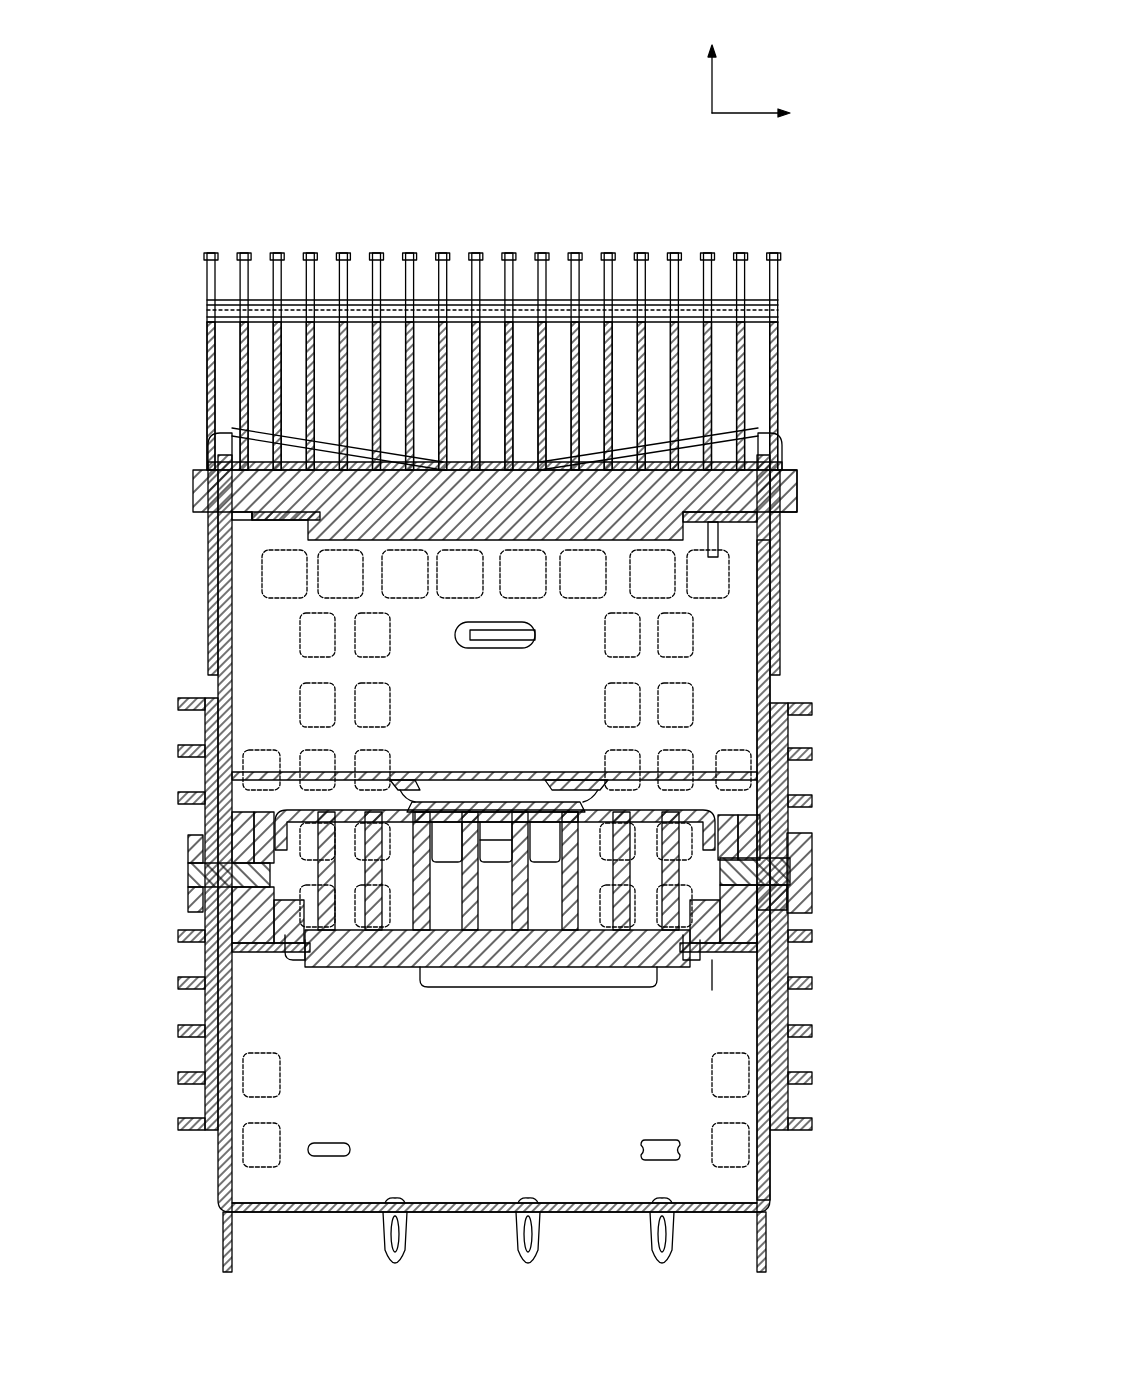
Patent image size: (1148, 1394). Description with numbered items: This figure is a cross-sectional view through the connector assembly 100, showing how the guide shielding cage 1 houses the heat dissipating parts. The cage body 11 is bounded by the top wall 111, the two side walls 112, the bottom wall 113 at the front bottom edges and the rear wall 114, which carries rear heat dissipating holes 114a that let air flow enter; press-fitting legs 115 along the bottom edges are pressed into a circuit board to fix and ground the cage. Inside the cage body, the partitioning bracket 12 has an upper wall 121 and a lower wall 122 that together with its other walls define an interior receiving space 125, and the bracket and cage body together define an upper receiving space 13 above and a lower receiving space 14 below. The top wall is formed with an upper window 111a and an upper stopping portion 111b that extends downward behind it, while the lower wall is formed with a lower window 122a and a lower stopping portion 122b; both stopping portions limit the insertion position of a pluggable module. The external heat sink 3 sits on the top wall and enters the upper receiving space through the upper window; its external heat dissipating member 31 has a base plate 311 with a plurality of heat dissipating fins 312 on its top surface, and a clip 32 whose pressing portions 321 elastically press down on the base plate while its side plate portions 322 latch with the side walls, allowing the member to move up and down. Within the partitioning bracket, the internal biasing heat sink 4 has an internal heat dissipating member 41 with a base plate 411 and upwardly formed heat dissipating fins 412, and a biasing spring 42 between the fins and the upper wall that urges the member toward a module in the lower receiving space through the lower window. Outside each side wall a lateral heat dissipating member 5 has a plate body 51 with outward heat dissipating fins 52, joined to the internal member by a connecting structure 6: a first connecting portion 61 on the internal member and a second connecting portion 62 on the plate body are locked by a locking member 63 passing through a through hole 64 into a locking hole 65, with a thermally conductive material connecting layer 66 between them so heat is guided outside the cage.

The connector assembly 100 is at (372, 91).
The guide shielding cage 1 is at (802, 1221).
The cage body 11 is at (786, 1177).
The top wall 111 is at (243, 503).
The upper window 111a is at (320, 520).
The upper stopping portion 111b is at (620, 548).
The side wall 112 is at (762, 1140).
The bottom wall 113 is at (460, 1210).
The rear wall 114 is at (592, 1167).
The rear heat dissipating hole 114a is at (392, 703).
The press-fitting leg 115 is at (758, 1270).
The partitioning bracket 12 is at (410, 737).
The upper wall 121 is at (428, 788).
The interior receiving space 125 is at (589, 773).
The lower wall 122 is at (262, 958).
The lower window 122a is at (688, 958).
The lower stopping portion 122b is at (568, 983).
The upper receiving space 13 is at (737, 660).
The lower receiving space 14 is at (360, 1185).
The external heat sink 3 is at (805, 270).
The external heat dissipating member 31 is at (808, 500).
The base plate 311 is at (797, 485).
The heat dissipating fin 312 is at (745, 352).
The clip 32 is at (798, 432).
The pressing portion 321 is at (592, 455).
The side plate portion 322 is at (772, 530).
The internal biasing heat sink 4 is at (508, 985).
The internal heat dissipating member 41 is at (408, 985).
The base plate 411 is at (448, 942).
The heat dissipating fin 412 is at (260, 850).
The biasing spring 42 is at (497, 780).
The lateral heat dissipating member 5 is at (157, 1051).
The plate body 51 is at (212, 1145).
The heat dissipating fin 52 is at (190, 1135).
The connecting structure 6 is at (155, 829).
The first connecting portion 61 is at (295, 938).
The second connecting portion 62 is at (203, 903).
The locking member 63 is at (205, 878).
The through hole 64 is at (200, 850).
The locking hole 65 is at (252, 838).
The thermally conductive material connecting layer 66 is at (235, 915).